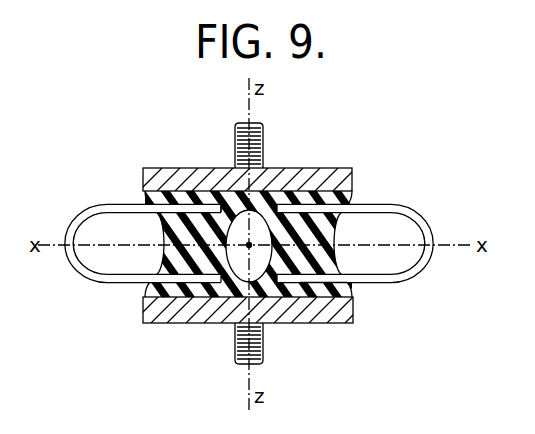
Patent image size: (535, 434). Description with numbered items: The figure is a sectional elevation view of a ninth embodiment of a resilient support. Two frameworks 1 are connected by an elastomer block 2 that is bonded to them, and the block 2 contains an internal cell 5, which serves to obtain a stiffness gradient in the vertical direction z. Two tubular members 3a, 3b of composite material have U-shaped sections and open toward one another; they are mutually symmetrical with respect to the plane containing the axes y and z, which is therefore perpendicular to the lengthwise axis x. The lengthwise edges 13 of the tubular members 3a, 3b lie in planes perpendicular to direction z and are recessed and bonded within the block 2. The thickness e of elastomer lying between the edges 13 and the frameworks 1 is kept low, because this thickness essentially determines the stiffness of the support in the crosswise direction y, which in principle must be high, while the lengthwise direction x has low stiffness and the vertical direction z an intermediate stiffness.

The framework 1 is at (282, 176).
The elastomer block 2 is at (302, 240).
The tubular member 3a is at (72, 237).
The tubular member 3b is at (432, 238).
The internal cell 5 is at (242, 267).
The lengthwise edges 13 is at (247, 192).
The thickness of elastomer material e is at (343, 292).